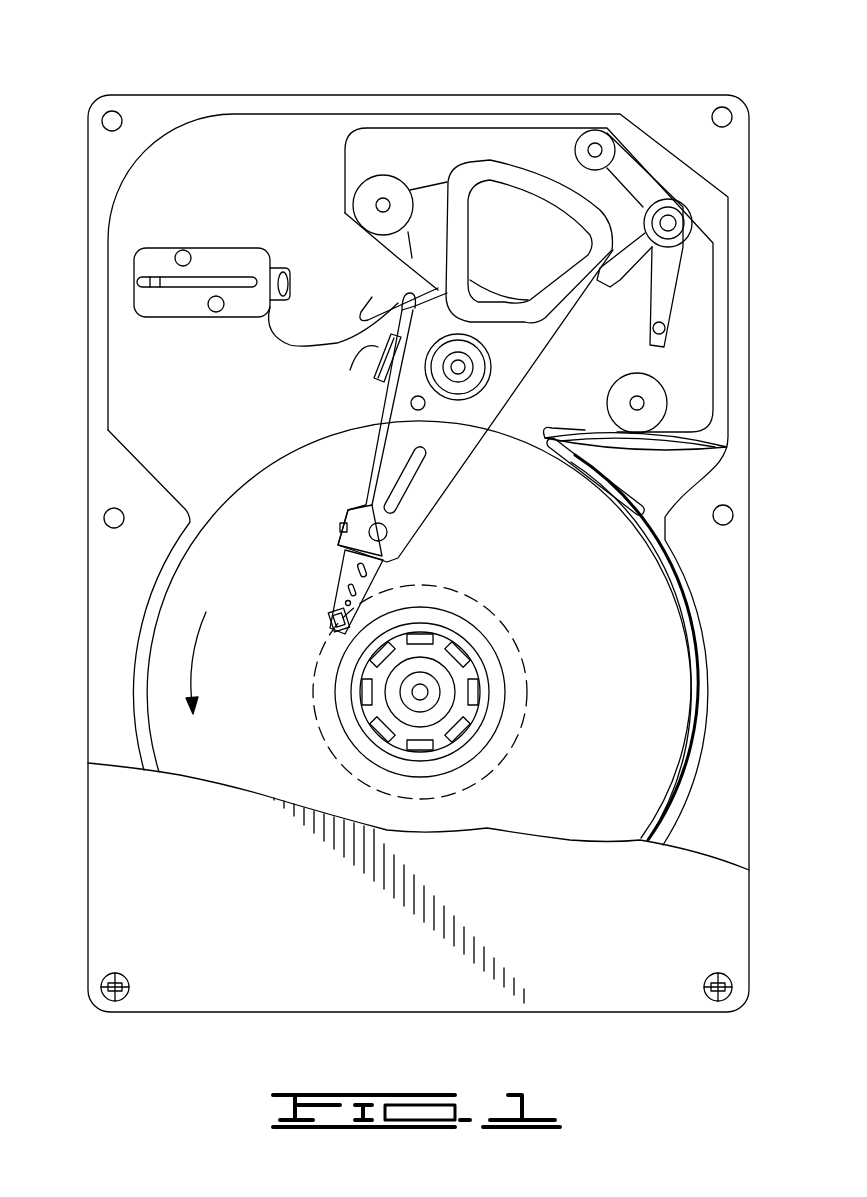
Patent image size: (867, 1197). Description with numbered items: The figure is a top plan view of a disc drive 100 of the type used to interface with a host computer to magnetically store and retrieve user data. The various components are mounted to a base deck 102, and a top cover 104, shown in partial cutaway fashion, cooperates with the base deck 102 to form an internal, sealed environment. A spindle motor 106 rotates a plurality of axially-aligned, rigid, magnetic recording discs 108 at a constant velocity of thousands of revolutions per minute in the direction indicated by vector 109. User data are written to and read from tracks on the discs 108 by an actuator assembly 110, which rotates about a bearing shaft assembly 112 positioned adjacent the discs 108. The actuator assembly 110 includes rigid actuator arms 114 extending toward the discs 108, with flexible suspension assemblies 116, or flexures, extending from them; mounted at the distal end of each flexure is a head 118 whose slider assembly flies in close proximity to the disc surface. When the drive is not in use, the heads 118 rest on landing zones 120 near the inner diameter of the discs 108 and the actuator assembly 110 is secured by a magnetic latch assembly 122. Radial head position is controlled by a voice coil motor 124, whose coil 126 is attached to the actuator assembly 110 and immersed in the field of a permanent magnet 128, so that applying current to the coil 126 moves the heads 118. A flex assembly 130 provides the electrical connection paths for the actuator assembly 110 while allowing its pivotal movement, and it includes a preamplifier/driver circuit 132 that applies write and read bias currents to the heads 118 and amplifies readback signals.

The disc drive 100 is at (183, 58).
The base deck 102 is at (137, 385).
The top cover 104 is at (137, 836).
The spindle motor 106 is at (467, 678).
The magnetic recording discs 108 is at (670, 703).
The vector 109 is at (197, 650).
The actuator assembly 110 is at (420, 442).
The bearing shaft assembly 112 is at (463, 372).
The actuator arms 114 is at (420, 487).
The flexible suspension assemblies 116 is at (357, 577).
The head 118 is at (338, 617).
The landing zones 120 is at (490, 615).
The magnetic latch assembly 122 is at (535, 143).
The voice coil motor 124 is at (478, 145).
The coil 126 is at (572, 272).
The permanent magnet 128 is at (617, 343).
The flex assembly 130 is at (315, 335).
The preamplifier/driver circuit 132 is at (372, 378).